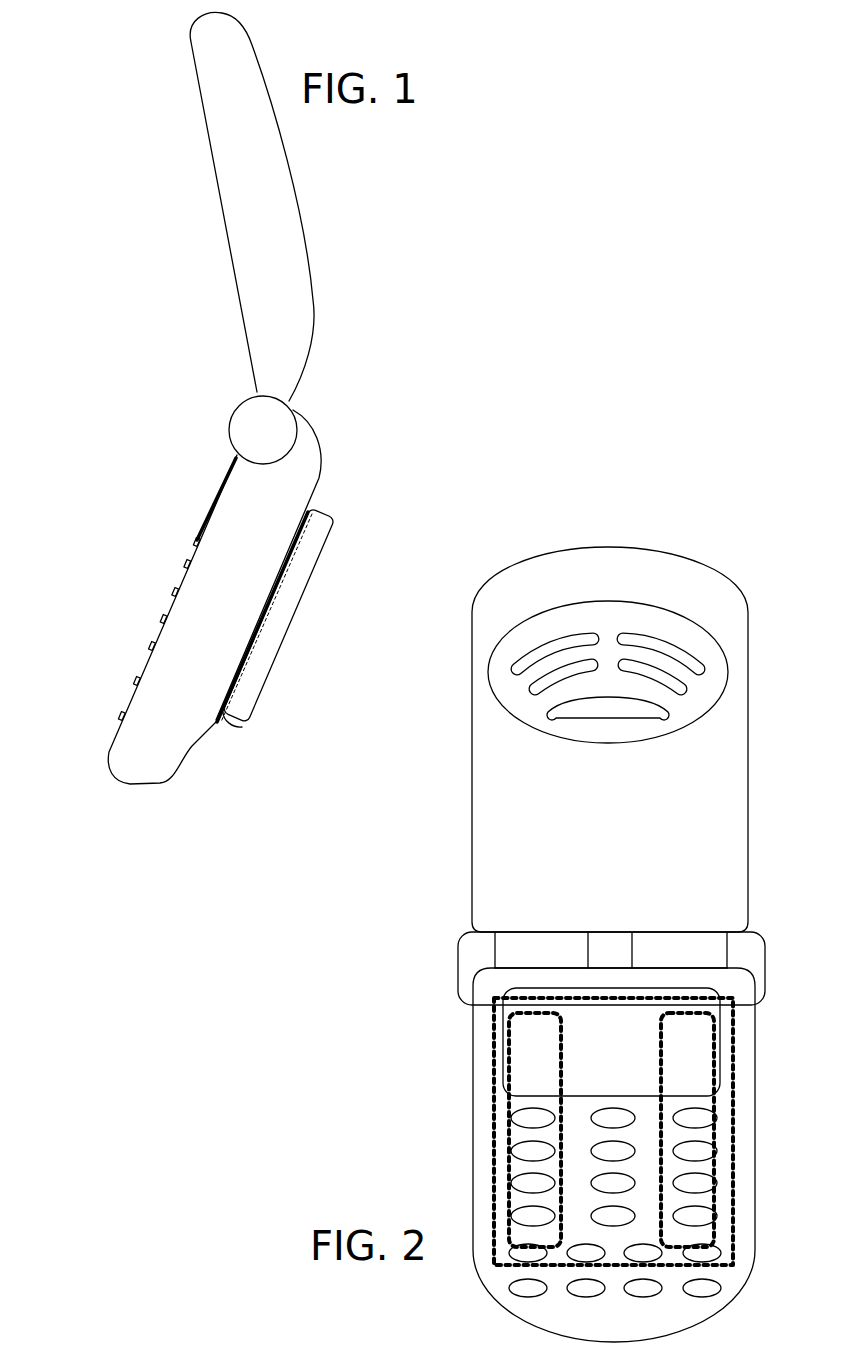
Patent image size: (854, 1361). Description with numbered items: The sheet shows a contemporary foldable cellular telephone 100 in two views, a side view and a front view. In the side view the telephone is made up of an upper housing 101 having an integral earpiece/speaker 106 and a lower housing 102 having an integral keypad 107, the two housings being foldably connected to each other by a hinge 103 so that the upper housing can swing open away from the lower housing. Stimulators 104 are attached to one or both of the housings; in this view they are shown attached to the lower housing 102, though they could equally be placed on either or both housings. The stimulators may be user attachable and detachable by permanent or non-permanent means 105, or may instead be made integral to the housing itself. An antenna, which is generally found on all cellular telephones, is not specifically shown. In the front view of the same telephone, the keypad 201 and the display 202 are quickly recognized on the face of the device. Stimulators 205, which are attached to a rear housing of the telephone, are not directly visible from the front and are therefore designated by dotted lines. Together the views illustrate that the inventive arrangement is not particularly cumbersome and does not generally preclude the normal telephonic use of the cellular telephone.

In FIG. 1, the foldable cellular telephone 100 is at (163, 832).
In FIG. 1, the upper housing 101 is at (292, 264).
In FIG. 1, the lower housing 102 is at (322, 460).
In FIG. 1, the hinge 103 is at (270, 420).
In FIG. 1, the stimulators 104 is at (297, 593).
In FIG. 1, the permanent or non-permanent means 105 is at (222, 712).
In FIG. 1, the earpiece/speaker 106 is at (222, 197).
In FIG. 1, the keypad 107 is at (149, 648).
In FIG. 2, the keypad 201 is at (700, 1120).
In FIG. 2, the display 202 is at (587, 1025).
In FIG. 2, the stimulators 205 is at (527, 1053).